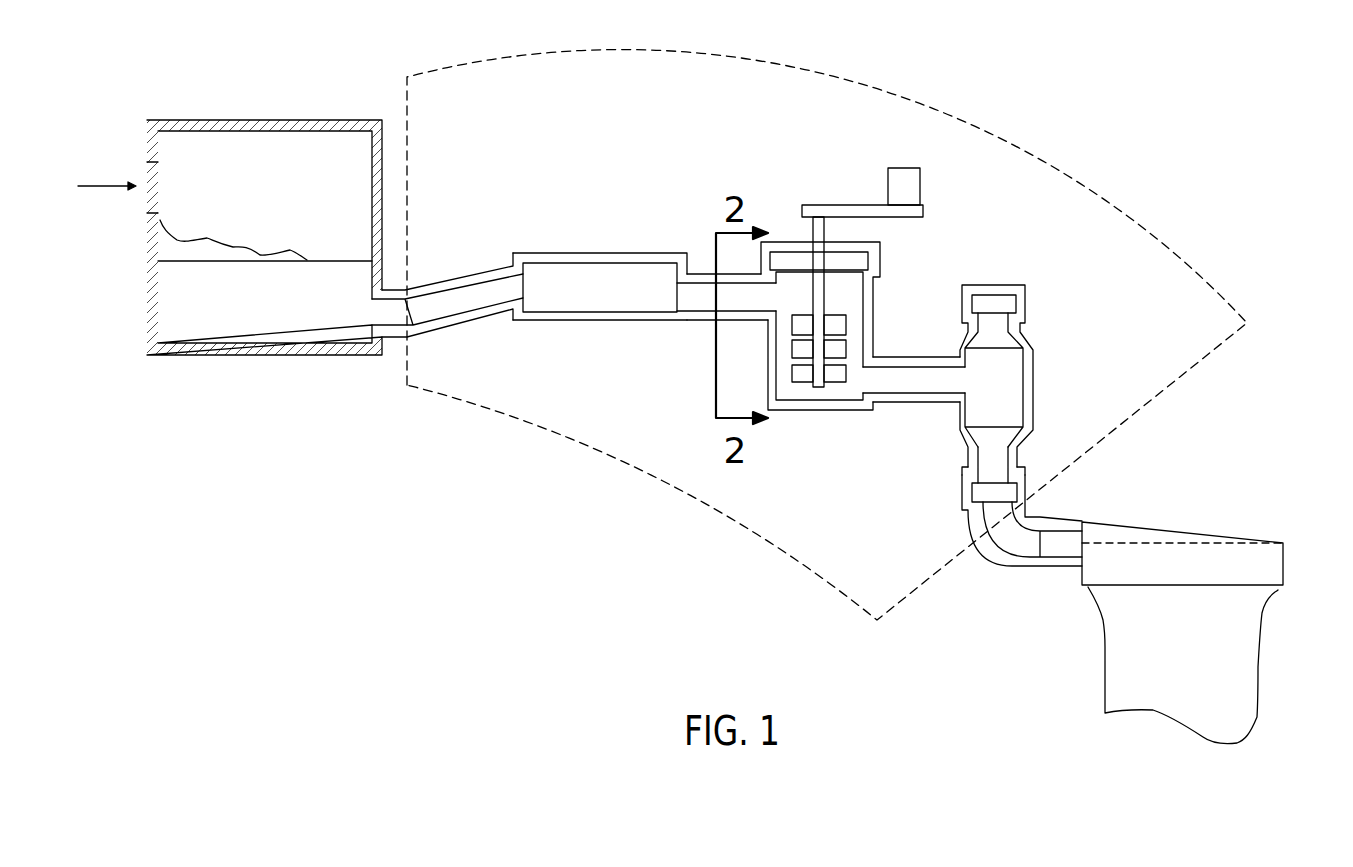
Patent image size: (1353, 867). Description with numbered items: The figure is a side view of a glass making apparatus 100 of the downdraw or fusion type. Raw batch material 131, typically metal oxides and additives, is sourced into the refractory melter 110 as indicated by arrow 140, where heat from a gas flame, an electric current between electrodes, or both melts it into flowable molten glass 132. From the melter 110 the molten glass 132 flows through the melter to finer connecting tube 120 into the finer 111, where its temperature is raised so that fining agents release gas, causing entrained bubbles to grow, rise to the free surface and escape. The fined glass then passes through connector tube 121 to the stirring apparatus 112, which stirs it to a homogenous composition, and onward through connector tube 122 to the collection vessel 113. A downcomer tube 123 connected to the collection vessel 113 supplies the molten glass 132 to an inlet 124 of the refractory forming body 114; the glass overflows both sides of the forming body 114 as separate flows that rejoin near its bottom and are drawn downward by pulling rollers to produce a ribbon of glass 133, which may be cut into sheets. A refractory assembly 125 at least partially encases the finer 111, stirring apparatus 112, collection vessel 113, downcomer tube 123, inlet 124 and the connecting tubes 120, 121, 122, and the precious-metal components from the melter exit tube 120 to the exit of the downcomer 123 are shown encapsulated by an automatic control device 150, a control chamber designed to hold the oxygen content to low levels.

The glass making apparatus 100 is at (1177, 90).
The melter 110 is at (345, 122).
The finer 111 is at (594, 260).
The stirring apparatus 112 is at (835, 402).
The collection vessel 113 is at (1028, 365).
The forming body 114 is at (1287, 560).
The melter to finer connecting tube 120 is at (477, 278).
The connector tube 121 is at (703, 312).
The connector tube 122 is at (907, 395).
The downcomer tube 123 is at (978, 467).
The inlet 124 is at (1055, 558).
The refractory assembly 125 is at (539, 243).
The batch material 131 is at (220, 243).
The molten glass 132 is at (165, 303).
The ribbon of glass 133 is at (1263, 660).
The arrow 140 is at (97, 187).
The automatic control device 150 is at (1152, 232).